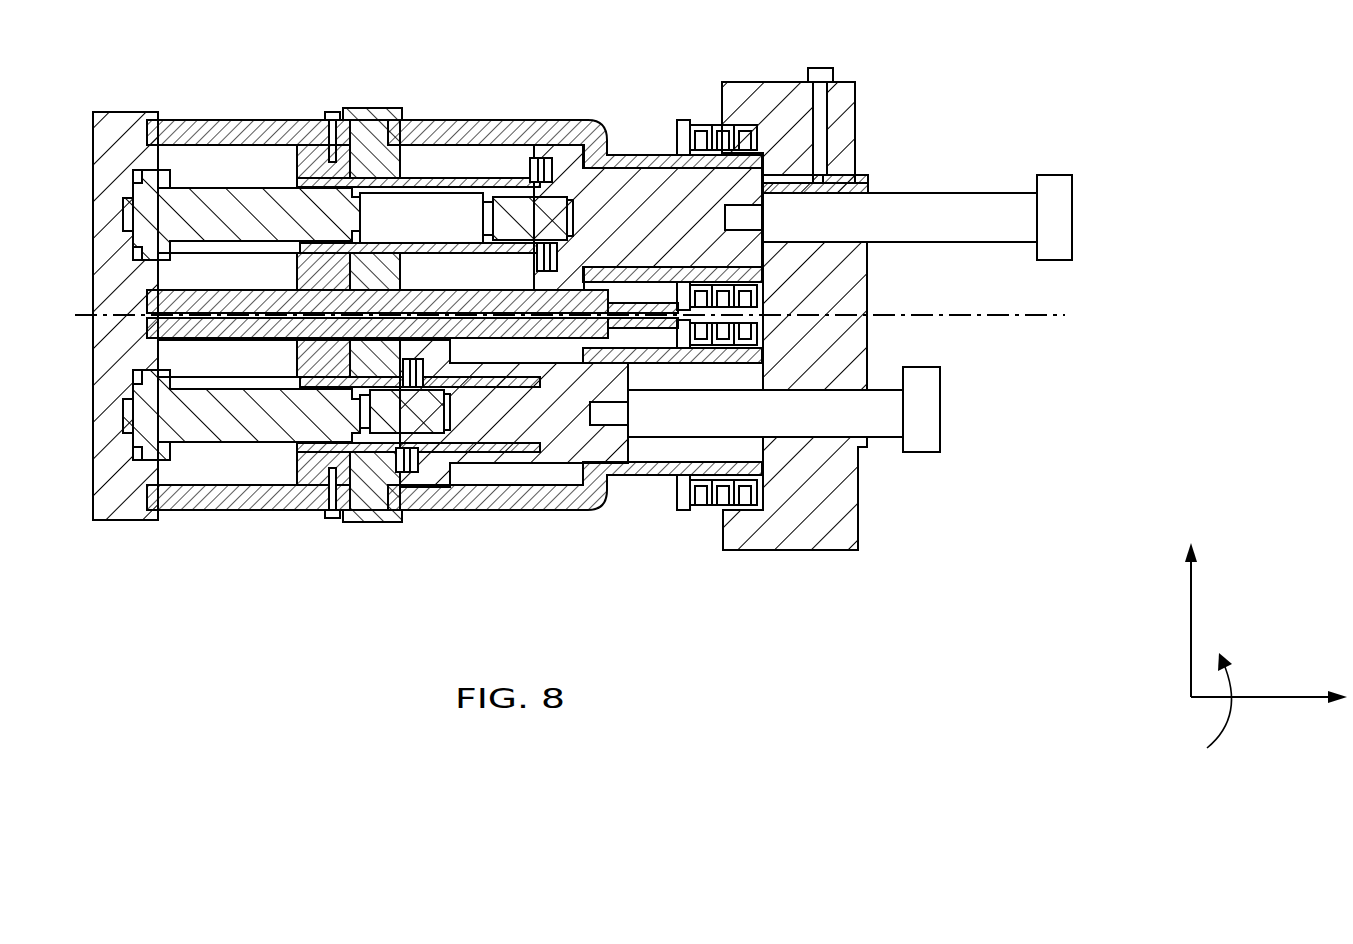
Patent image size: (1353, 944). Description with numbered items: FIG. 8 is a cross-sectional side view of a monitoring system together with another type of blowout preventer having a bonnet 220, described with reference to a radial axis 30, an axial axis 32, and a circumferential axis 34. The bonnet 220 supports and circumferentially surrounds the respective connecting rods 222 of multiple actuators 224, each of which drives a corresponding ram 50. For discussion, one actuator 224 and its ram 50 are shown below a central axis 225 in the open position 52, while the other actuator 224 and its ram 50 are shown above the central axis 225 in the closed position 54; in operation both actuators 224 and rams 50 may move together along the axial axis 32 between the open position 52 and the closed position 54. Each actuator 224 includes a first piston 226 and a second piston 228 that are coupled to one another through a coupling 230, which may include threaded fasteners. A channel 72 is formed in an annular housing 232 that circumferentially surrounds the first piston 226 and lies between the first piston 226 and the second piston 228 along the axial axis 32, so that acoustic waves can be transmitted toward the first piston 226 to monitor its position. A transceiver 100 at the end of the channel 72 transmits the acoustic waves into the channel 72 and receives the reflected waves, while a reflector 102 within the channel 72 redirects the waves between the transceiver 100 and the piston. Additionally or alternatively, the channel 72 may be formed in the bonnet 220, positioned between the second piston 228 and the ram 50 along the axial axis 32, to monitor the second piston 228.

The radial axis 30 is at (1191, 625).
The axial axis 32 is at (1265, 697).
The circumferential axis 34 is at (1235, 712).
The ram 50 is at (1057, 175).
The open position 52 is at (909, 524).
The closed position 54 is at (1001, 72).
The channel 72 is at (318, 120).
The transceiver 100 is at (333, 112).
The reflector 102 is at (305, 158).
The bonnet 220 is at (757, 82).
The connecting rod 222 is at (890, 232).
The actuator 224 is at (565, 98).
The central axis 225 is at (1025, 318).
The first piston 226 is at (265, 120).
The second piston 228 is at (672, 186).
The coupling 230 is at (519, 160).
The housing 232 is at (203, 120).